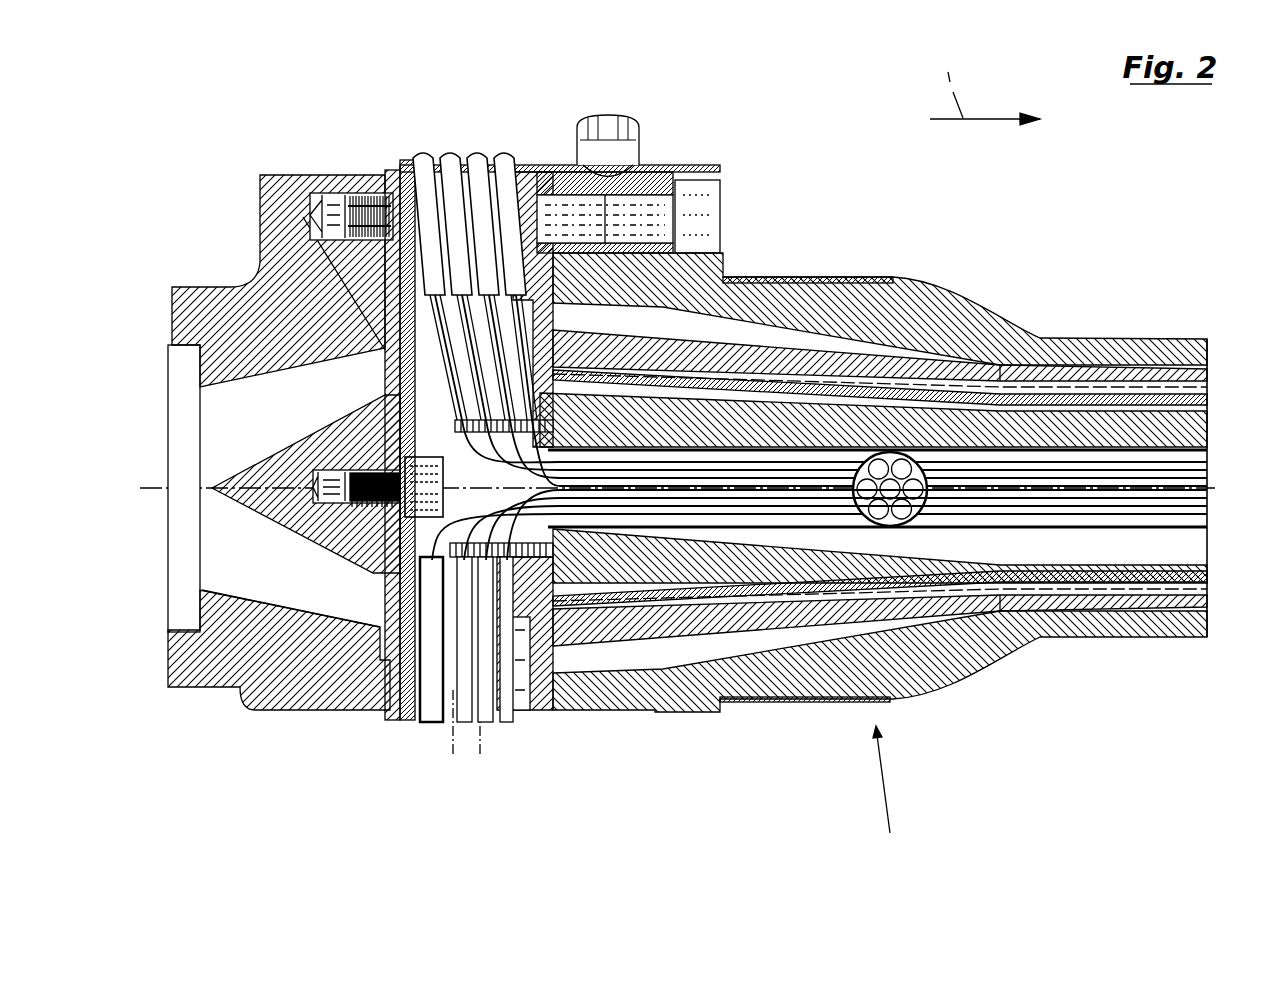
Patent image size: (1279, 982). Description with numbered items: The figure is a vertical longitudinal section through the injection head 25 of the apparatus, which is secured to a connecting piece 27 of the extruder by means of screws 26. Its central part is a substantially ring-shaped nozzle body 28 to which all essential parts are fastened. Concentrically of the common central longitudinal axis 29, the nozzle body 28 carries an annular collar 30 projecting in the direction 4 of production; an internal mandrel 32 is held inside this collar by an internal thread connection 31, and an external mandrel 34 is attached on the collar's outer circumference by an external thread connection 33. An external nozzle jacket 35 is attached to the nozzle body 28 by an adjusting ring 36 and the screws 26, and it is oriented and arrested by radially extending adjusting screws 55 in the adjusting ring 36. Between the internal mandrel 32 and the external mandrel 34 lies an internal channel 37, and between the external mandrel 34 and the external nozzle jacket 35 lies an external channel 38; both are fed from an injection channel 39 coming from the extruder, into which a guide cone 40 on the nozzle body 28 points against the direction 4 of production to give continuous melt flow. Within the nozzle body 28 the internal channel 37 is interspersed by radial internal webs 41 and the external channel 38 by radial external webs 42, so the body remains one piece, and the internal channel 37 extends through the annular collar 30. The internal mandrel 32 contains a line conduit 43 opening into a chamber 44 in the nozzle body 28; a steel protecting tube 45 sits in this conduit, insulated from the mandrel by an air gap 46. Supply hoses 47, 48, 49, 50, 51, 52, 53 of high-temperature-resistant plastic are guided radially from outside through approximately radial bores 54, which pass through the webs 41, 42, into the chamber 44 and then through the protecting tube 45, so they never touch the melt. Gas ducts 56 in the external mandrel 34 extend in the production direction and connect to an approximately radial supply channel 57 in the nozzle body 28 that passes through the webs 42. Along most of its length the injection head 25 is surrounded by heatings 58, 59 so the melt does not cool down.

The direction of production 4 is at (985, 87).
The injection head 25 is at (890, 795).
The screws 26 is at (712, 230).
The connecting piece 27 is at (215, 650).
The nozzle body 28 is at (395, 690).
The central longitudinal axis 29 is at (153, 488).
The annular collar 30 is at (677, 240).
The internal thread connection 31 is at (635, 690).
The internal mandrel 32 is at (1000, 425).
The external thread connection 33 is at (612, 118).
The external mandrel 34 is at (895, 365).
The external nozzle jacket 35 is at (838, 313).
The adjusting ring 36 is at (670, 165).
The internal channel 37 is at (750, 655).
The external channel 38 is at (1000, 640).
The injection channel 39 is at (297, 407).
The guide cone 40 is at (350, 505).
The internal webs 41 is at (395, 305).
The external webs 42 is at (395, 560).
The line conduit 43 is at (1040, 610).
The chamber 44 is at (372, 385).
The protecting tube 45 is at (1180, 638).
The air gap 46 is at (700, 690).
The supply hose 47 is at (425, 155).
The supply hose 48 is at (450, 155).
The supply hose 49 is at (477, 155).
The supply hose 50 is at (503, 155).
The supply hose 51 is at (433, 720).
The supply hose 52 is at (458, 720).
The supply hose 53 is at (482, 720).
The bores 54 is at (548, 166).
The adjusting screws 55 is at (590, 170).
The gas ducts 56 is at (942, 385).
The supply channel 57 is at (527, 665).
The heating 58 is at (410, 300).
The heating 59 is at (780, 277).